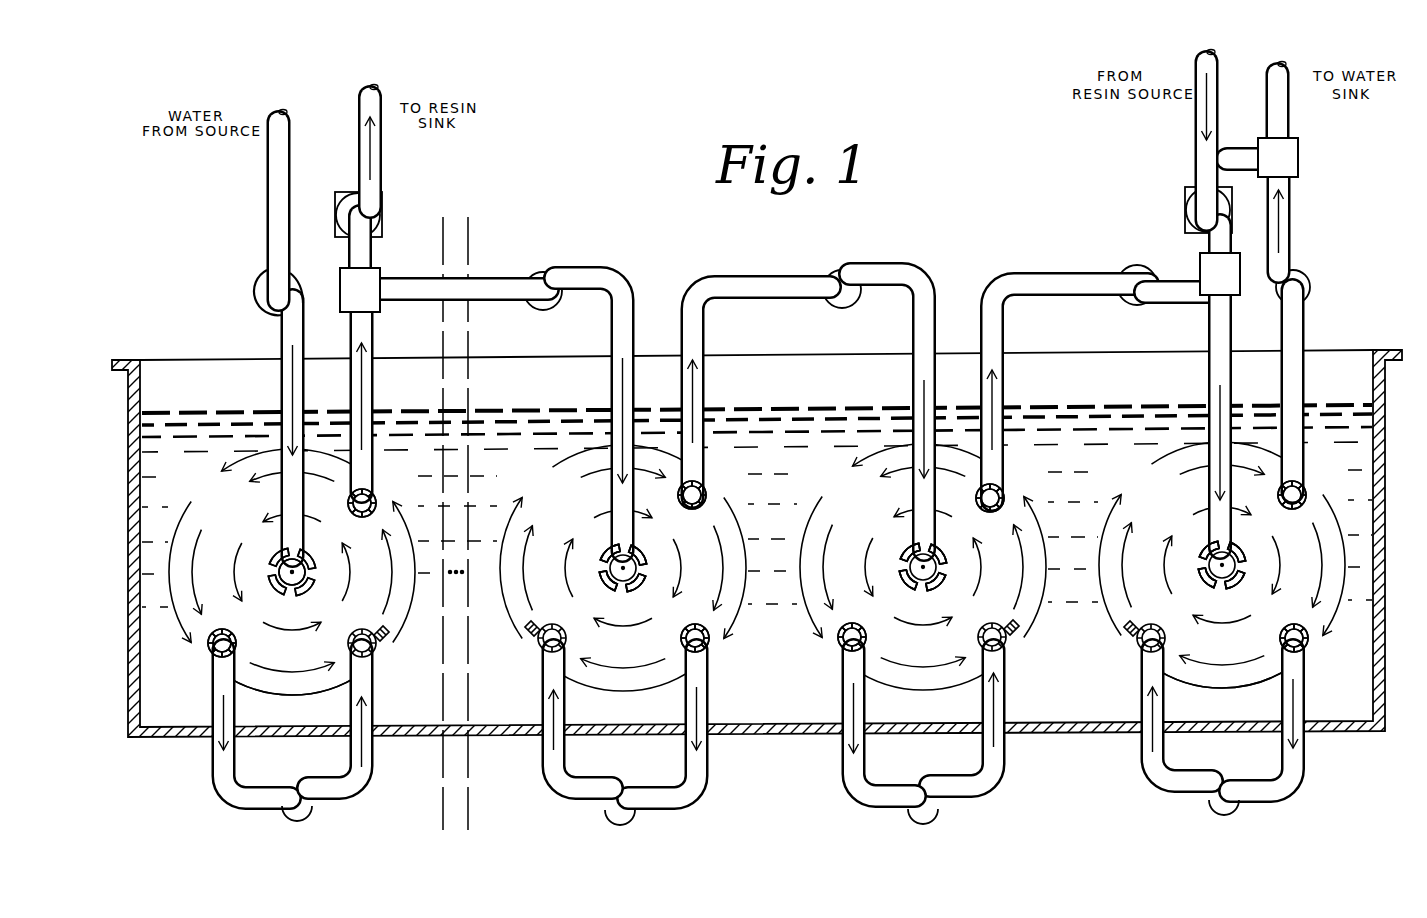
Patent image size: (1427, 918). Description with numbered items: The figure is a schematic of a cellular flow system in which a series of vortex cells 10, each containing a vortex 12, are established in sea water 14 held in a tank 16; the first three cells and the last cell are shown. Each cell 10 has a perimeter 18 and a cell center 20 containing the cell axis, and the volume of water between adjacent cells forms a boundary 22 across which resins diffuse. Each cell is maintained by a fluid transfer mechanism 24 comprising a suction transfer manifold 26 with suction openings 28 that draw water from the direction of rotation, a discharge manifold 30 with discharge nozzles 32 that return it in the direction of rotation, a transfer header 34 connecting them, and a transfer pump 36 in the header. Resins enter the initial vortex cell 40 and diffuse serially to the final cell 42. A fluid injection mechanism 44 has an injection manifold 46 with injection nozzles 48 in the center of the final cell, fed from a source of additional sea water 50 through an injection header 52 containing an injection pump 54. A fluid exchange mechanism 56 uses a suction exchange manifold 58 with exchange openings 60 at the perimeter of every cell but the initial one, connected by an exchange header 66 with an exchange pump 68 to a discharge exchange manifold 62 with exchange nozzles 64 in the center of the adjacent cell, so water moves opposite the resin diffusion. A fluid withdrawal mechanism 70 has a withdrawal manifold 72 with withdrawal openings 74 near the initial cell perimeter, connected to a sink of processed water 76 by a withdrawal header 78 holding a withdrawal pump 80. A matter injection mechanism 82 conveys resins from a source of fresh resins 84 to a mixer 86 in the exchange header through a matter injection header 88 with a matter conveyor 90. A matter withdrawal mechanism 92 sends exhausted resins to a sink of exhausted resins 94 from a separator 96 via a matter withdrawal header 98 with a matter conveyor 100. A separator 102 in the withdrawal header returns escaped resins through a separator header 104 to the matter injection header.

The vortex cell 10 is at (197, 668).
The vortex 12 is at (238, 494).
The sea water 14 is at (414, 710).
The tank 16 is at (128, 525).
The perimeter 18 is at (172, 557).
The cell center 20 is at (302, 621).
The boundary 22 is at (436, 581).
The fluid transfer mechanism 24 is at (204, 788).
The suction transfer manifold 26 is at (235, 638).
The suction openings 28 is at (222, 628).
The discharge manifold 30 is at (350, 630).
The discharge nozzles 32 is at (380, 625).
The transfer header 34 is at (372, 785).
The transfer pump 36 is at (303, 818).
The initial vortex cell 40 is at (1226, 658).
The final cell 42 is at (282, 655).
The fluid injection mechanism 44 is at (270, 322).
The injection manifold 46 is at (314, 586).
The injection nozzles 48 is at (308, 563).
The source of additional sea water 50 is at (283, 110).
The injection header 52 is at (282, 332).
The injection pump 54 is at (300, 290).
The fluid exchange mechanism 56 is at (791, 385).
The suction exchange manifold 58 is at (348, 503).
The exchange openings 60 is at (372, 515).
The discharge exchange manifold 62 is at (608, 552).
The exchange nozzles 64 is at (640, 553).
The exchange header 66 is at (374, 384).
The exchange pump 68 is at (552, 308).
The fluid withdrawal mechanism 70 is at (1323, 259).
The withdrawal manifold 72 is at (1284, 508).
The withdrawal openings 74 is at (1275, 485).
The sink of processed water 76 is at (1275, 60).
The withdrawal header 78 is at (1292, 122).
The withdrawal pump 80 is at (1306, 272).
The matter injection mechanism 82 is at (1213, 144).
The source of fresh resins 84 is at (1203, 48).
The mixer 86 is at (1240, 295).
The matter injection header 88 is at (1208, 250).
The matter conveyor 90 is at (1186, 212).
The matter withdrawal mechanism 92 is at (392, 177).
The sink of exhausted resins 94 is at (379, 86).
The separator 96 is at (380, 311).
The matter withdrawal header 98 is at (372, 258).
The matter conveyor 100 is at (382, 212).
The separator 102 is at (1299, 158).
The separator header 104 is at (1230, 148).